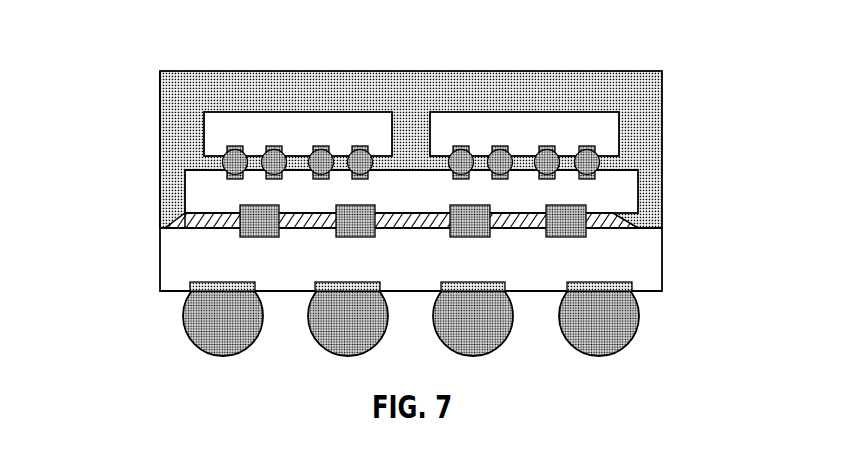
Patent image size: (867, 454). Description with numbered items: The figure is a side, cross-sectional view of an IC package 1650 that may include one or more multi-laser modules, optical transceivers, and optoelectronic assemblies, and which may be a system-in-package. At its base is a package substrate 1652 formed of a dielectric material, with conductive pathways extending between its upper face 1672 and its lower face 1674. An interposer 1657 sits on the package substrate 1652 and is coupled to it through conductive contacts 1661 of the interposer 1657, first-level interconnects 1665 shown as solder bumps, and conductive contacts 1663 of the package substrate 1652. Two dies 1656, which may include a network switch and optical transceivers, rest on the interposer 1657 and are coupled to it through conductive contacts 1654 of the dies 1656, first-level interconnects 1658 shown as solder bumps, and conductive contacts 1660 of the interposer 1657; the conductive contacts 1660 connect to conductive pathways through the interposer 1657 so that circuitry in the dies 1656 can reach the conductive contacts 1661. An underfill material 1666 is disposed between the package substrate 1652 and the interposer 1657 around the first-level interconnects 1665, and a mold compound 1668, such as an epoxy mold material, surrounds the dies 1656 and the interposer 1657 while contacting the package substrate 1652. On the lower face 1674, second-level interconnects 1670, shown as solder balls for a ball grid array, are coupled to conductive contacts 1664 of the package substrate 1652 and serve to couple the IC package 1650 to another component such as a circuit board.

The IC package 1650 is at (428, 213).
The package substrate 1652 is at (367, 258).
The conductive contacts 1654 is at (447, 107).
The dies 1656 is at (319, 144).
The interposer 1657 is at (434, 202).
The first-level interconnects 1658 is at (468, 155).
The conductive contacts 1660 is at (467, 188).
The conductive contacts 1661 is at (455, 231).
The conductive contacts 1663 is at (432, 296).
The conductive contacts 1664 is at (461, 281).
The first-level interconnects 1665 is at (469, 241).
The underfill material 1666 is at (115, 149).
The mold compound 1668 is at (379, 136).
The second-level interconnects 1670 is at (454, 320).
The face 1672 is at (126, 200).
The face 1674 is at (411, 340).